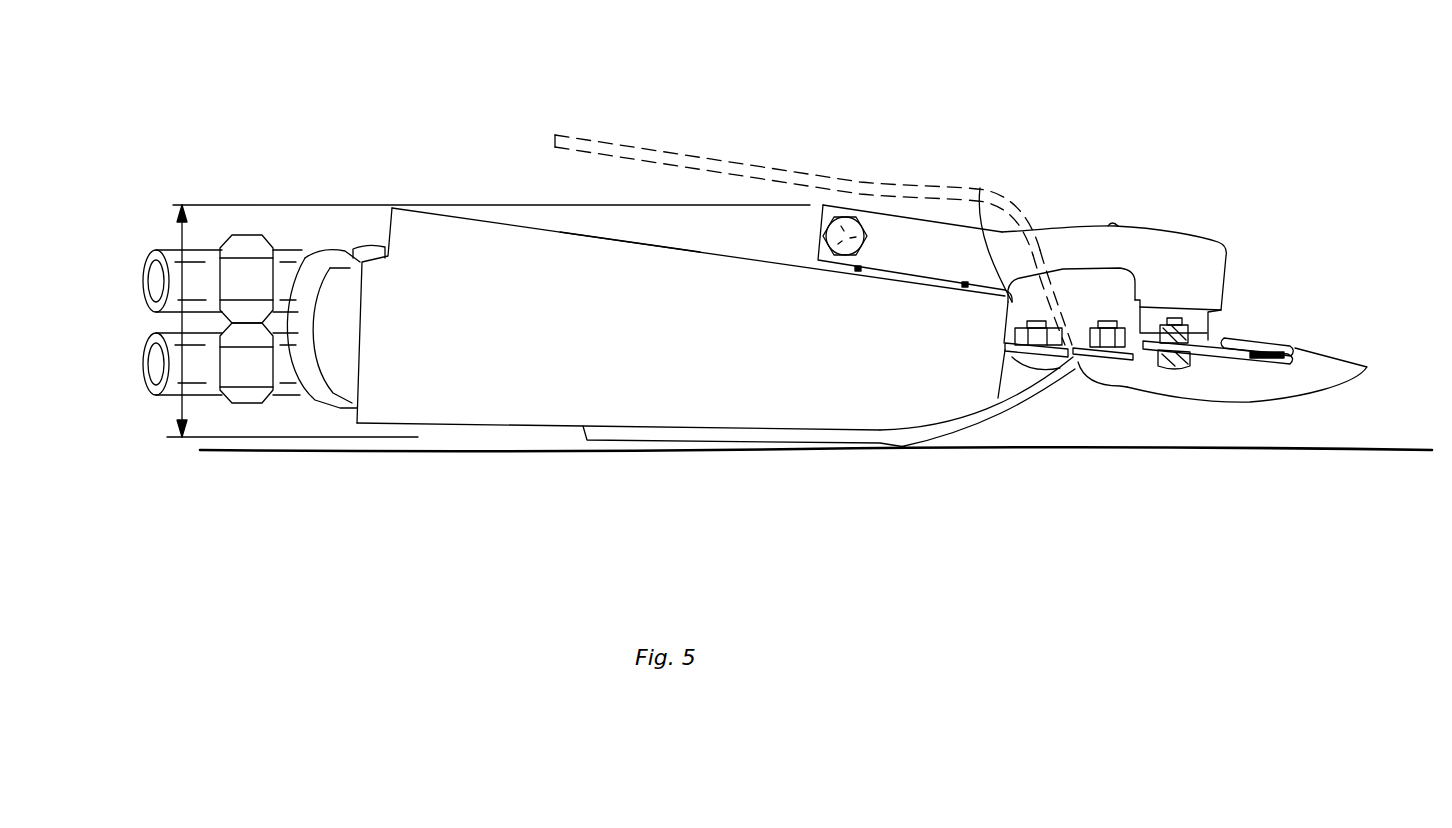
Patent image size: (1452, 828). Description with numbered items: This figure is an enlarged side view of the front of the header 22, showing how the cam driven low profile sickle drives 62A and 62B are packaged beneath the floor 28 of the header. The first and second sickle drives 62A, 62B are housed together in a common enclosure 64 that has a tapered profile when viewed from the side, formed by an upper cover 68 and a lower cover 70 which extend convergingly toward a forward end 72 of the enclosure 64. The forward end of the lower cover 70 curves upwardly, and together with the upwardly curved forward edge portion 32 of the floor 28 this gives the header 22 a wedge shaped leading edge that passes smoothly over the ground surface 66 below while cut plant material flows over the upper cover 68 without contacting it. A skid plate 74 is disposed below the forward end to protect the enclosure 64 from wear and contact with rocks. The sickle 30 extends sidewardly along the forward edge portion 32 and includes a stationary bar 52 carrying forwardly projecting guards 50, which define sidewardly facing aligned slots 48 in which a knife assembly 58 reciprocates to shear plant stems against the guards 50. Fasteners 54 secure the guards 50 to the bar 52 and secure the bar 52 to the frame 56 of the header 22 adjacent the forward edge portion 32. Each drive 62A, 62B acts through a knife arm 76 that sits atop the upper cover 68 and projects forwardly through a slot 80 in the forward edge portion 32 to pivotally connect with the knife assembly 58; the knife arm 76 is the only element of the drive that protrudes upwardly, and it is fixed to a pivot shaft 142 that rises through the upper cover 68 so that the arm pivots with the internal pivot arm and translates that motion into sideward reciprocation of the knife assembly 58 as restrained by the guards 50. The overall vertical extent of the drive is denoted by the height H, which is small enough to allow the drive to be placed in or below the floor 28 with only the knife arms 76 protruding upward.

The header 22 is at (291, 205).
The pivot shaft 142 is at (343, 247).
The common enclosure 64 is at (488, 222).
The upper cover 68 is at (630, 285).
The lower cover 70 is at (515, 426).
The floor 28 is at (748, 158).
The slot 80 is at (1048, 255).
The knife arm 76 is at (932, 212).
The forward end 72 is at (980, 188).
The first sickle drive 62A is at (1114, 220).
The second sickle drive 62B is at (1126, 226).
The forward edge portion 32 is at (1071, 313).
The fasteners 54 is at (1137, 283).
The stationary bar 52 is at (1100, 360).
The frame 56 is at (1040, 390).
The knife assembly 58 is at (1210, 357).
The slots 48 is at (1293, 340).
The sickle 30 is at (1258, 337).
The guards 50 is at (1330, 395).
The skid plate 74 is at (920, 437).
The ground surface 66 is at (1397, 449).
The height H is at (187, 407).